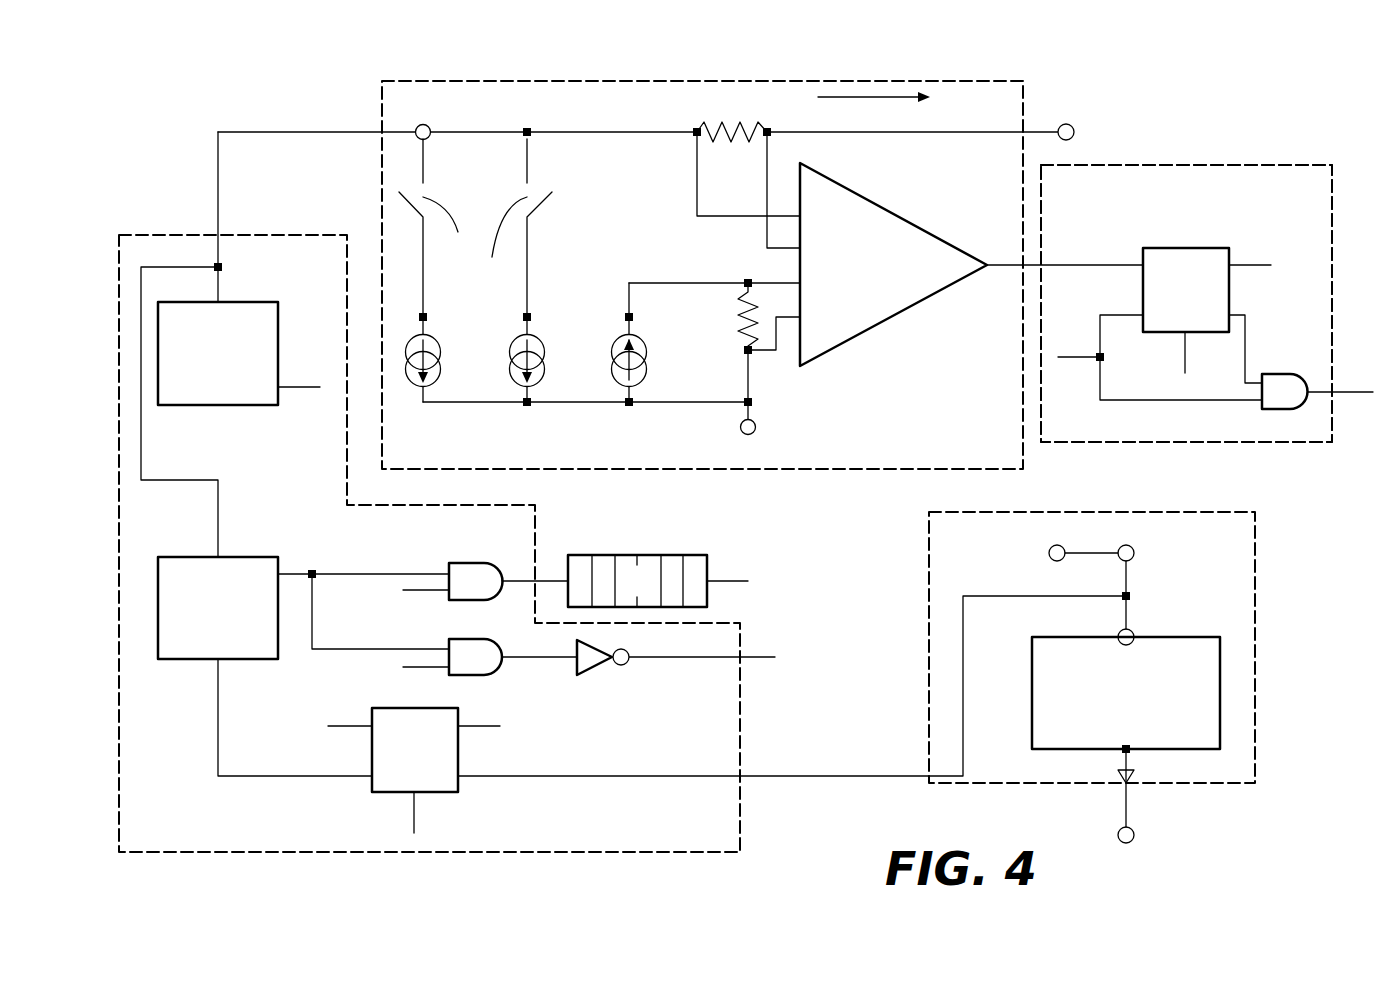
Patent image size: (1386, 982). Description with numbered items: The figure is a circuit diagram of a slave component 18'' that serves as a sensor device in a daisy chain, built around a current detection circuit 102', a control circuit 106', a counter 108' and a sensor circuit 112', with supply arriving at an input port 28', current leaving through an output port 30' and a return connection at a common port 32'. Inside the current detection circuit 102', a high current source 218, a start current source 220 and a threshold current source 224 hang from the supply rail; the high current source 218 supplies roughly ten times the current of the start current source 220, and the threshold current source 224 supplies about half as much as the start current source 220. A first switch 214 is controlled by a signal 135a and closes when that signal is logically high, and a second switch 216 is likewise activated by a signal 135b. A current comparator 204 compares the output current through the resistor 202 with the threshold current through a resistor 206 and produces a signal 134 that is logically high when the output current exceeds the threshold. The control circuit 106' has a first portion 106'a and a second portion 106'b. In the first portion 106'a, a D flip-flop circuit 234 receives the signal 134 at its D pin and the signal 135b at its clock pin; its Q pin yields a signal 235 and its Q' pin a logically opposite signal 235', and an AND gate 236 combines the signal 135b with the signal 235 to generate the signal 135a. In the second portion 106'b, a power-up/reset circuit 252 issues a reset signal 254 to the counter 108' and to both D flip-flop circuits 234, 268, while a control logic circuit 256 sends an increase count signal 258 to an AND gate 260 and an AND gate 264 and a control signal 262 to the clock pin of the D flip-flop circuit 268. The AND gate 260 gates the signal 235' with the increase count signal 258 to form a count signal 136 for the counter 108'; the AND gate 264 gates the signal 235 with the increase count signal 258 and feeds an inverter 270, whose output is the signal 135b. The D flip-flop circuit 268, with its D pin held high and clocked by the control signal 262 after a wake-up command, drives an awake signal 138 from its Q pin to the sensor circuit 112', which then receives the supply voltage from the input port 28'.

The slave component 18'' is at (1294, 63).
The current detection circuit 102' is at (702, 253).
The input port 28' is at (707, 367).
The output port 30' is at (1096, 115).
The resistor 202 is at (700, 125).
The first switch 214 is at (425, 192).
The second switch 216 is at (523, 193).
The signal 135a is at (1367, 365).
The signal 135b is at (1076, 358).
The high current source 218 is at (440, 341).
The start current source 220 is at (544, 341).
The threshold current source 224 is at (646, 341).
The resistor 206 is at (743, 310).
The ground terminal 32' is at (968, 632).
The current comparator 204 is at (855, 251).
The signal 134 is at (1030, 265).
The control circuit 106' is at (978, 490).
The first portion 106'a is at (1186, 286).
The second portion 106'b is at (476, 543).
The D flip flop circuit 234 is at (1181, 324).
The signal 235' is at (831, 424).
The signal 235 is at (830, 500).
The AND gate 236 is at (1285, 391).
The reset signal 254 is at (1183, 366).
The power-up/reset circuit 252 is at (680, 508).
The control logic circuit 256 is at (218, 608).
The increase count signal 258 is at (296, 572).
The AND gate 260 is at (476, 581).
The count signal 136 is at (517, 579).
The counter 108' is at (638, 568).
The AND gate 264 is at (475, 657).
The D flip-flop circuit 268 is at (518, 659).
The inverter 270 is at (605, 664).
The control signal 262 is at (320, 775).
The awake signal 138 is at (785, 773).
The sensor circuit 112' is at (1137, 647).